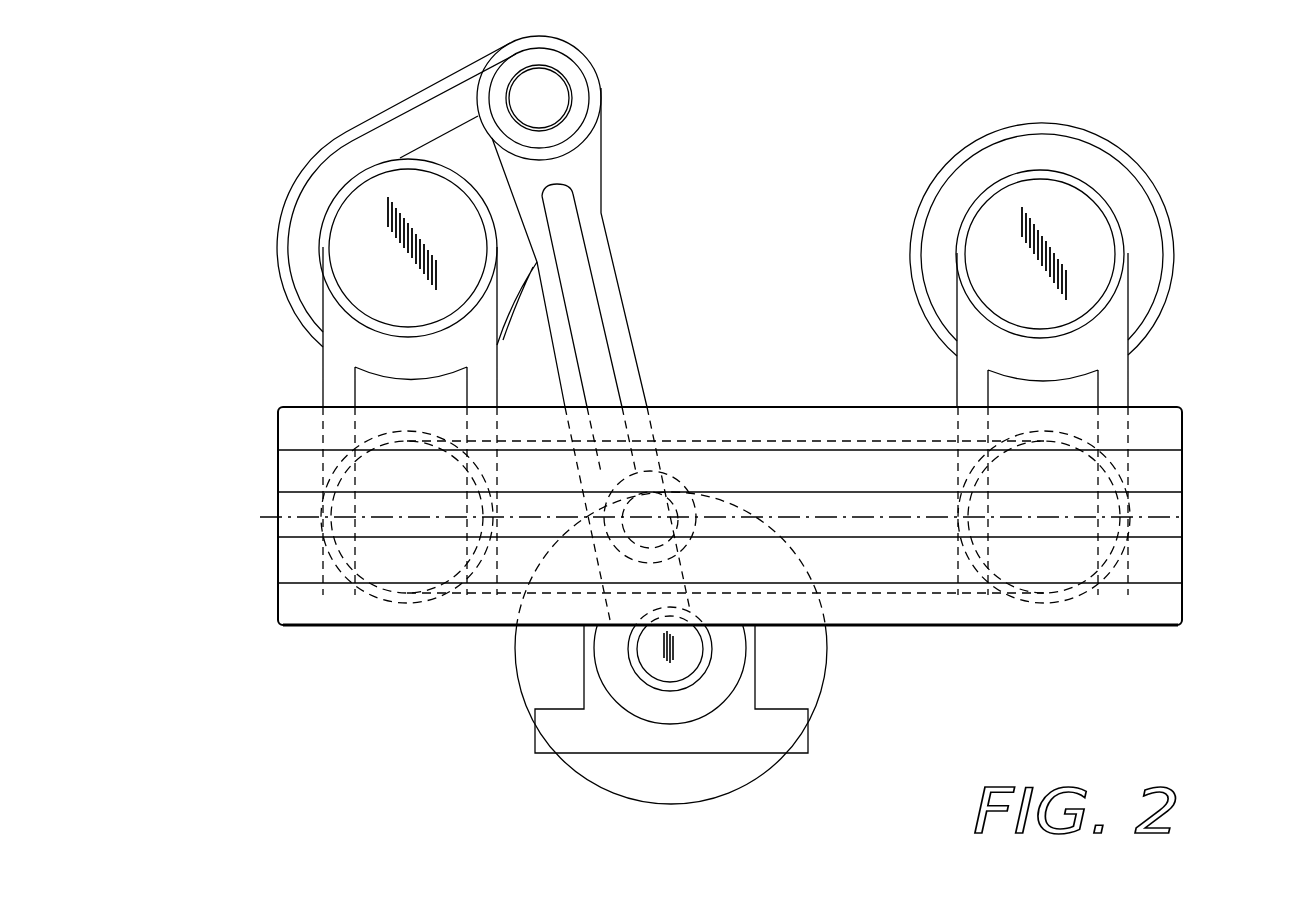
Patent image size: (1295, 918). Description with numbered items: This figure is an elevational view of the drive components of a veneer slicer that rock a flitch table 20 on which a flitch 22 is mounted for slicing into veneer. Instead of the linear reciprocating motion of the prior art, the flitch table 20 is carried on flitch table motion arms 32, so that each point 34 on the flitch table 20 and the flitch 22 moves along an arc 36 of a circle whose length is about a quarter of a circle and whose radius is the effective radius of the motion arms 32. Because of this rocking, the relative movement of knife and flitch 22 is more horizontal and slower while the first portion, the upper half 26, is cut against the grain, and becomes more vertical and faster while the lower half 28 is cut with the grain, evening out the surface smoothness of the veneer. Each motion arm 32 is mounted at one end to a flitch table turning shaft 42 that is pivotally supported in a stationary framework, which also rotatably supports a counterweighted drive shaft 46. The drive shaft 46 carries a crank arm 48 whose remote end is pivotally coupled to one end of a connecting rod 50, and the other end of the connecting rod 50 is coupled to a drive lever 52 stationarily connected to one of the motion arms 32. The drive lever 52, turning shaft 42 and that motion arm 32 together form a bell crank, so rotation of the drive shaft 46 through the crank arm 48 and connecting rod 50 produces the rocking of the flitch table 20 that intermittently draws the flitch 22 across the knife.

The flitch table 20 is at (1134, 437).
The flitch 22 is at (907, 590).
The upper half 26 is at (836, 494).
The lower half 28 is at (460, 552).
The flitch table motion arm 32 is at (350, 336).
The point 34 is at (380, 515).
The arc 36 is at (292, 491).
The flitch table turning shaft 42 is at (380, 245).
The drive shaft 46 is at (667, 660).
The crank arm 48 is at (607, 632).
The connecting rod 50 is at (588, 223).
The drive lever 52 is at (447, 118).